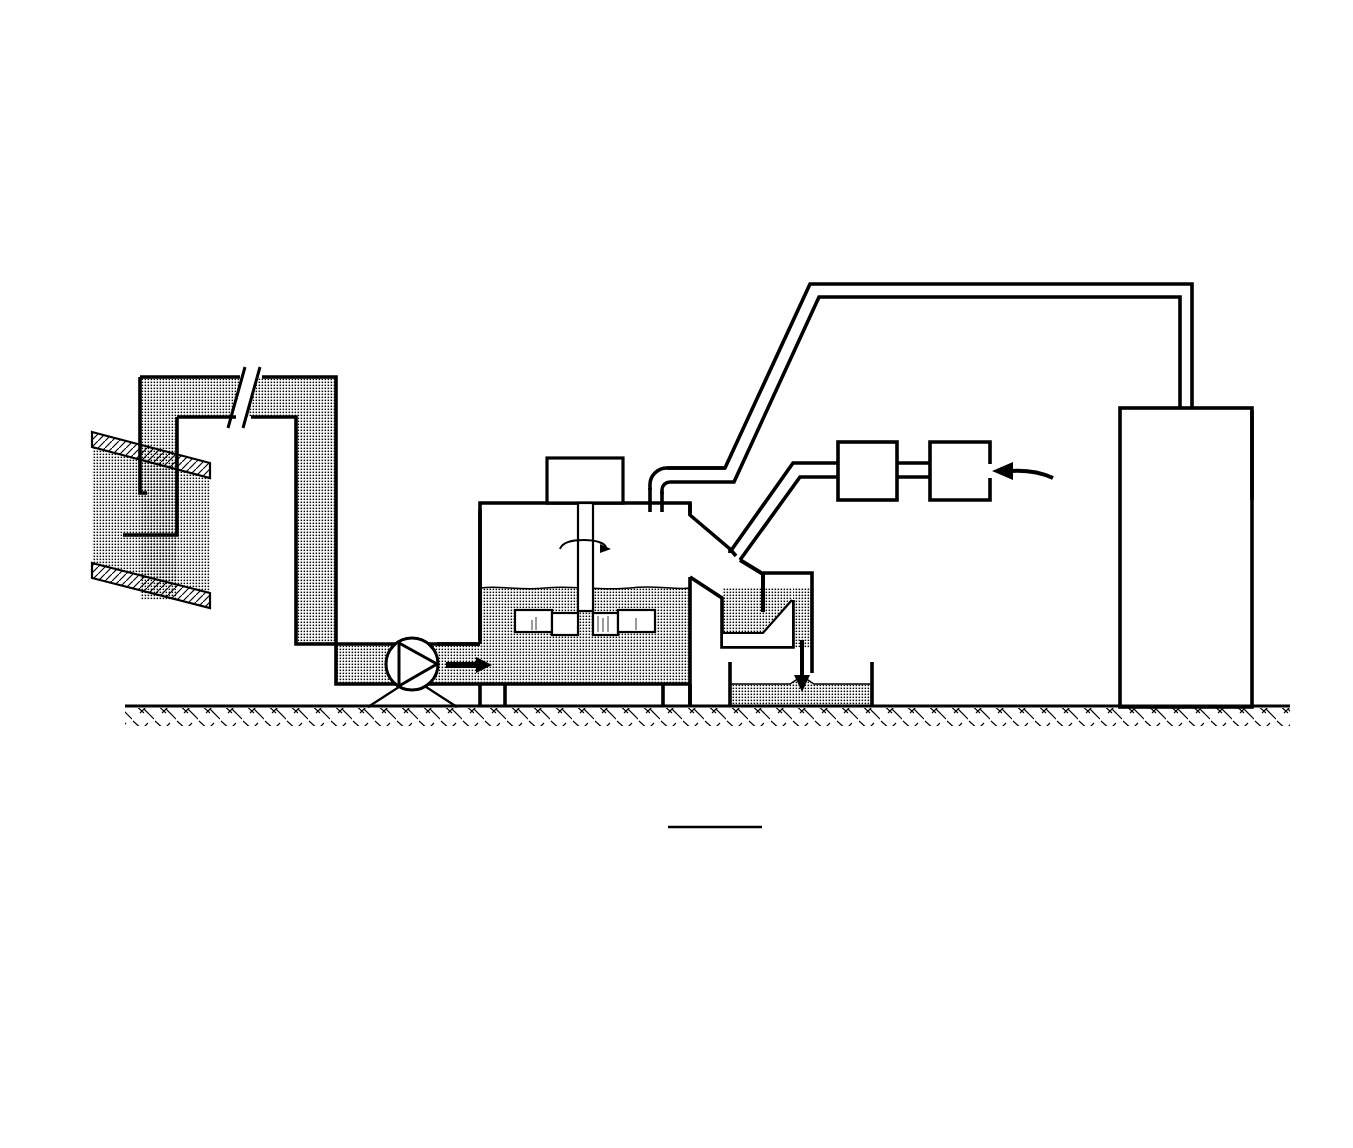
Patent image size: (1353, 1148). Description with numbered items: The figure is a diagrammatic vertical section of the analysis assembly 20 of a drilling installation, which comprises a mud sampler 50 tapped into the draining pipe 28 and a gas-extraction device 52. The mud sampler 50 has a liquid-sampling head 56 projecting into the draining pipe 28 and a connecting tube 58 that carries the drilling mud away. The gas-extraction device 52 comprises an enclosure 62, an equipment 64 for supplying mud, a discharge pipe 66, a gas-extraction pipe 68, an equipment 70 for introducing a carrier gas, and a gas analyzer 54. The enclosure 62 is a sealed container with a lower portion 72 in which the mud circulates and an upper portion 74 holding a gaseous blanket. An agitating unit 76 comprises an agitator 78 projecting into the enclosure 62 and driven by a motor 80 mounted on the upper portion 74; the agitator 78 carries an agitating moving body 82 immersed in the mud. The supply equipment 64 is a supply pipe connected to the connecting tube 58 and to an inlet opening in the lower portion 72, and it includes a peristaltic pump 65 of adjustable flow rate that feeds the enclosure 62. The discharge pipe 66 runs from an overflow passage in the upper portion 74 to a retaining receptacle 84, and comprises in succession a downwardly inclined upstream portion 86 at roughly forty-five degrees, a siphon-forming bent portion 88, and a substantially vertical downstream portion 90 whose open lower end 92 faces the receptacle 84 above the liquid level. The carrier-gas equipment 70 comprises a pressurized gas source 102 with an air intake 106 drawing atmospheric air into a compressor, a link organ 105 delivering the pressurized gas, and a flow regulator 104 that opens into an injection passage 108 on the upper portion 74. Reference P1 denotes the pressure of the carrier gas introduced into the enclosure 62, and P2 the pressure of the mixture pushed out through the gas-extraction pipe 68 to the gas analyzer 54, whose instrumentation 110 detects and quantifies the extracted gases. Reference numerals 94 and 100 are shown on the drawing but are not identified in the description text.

The analysis assembly 20 is at (623, 241).
The draining pipe 28 is at (143, 592).
The mud sampler 50 is at (297, 350).
The gas-extraction device 52 is at (535, 374).
The gas analyzer 54 is at (1215, 383).
The liquid-sampling head 56 is at (135, 483).
The connecting tube 58 is at (337, 445).
The enclosure 62 is at (480, 503).
The equipment for supplying mud 64 is at (458, 642).
The peristaltic pump 65 is at (412, 637).
The discharge pipe 66 is at (755, 563).
The gas-extraction pipe 68 is at (706, 456).
The equipment for introducing a carrier gas 70 is at (916, 512).
The lower portion 72 is at (692, 688).
The upper portion 74 is at (493, 540).
The agitating unit 76 is at (527, 481).
The agitator 78 is at (594, 573).
The motor 80 is at (583, 465).
The agitating moving body 82 is at (565, 603).
The retaining receptacle 84 is at (875, 675).
The upstream portion 86 is at (703, 592).
The bent portion 88 is at (745, 635).
The downstream portion 90 is at (813, 637).
The lower end 92 is at (814, 676).
The valve 94 is at (700, 532).
The pipe inlet 100 is at (655, 512).
The pressurized gas source 102 is at (962, 441).
The flow regulator 104 is at (871, 440).
The link organ 105 is at (916, 462).
The air intake 106 is at (991, 464).
The injection passage 108 is at (730, 556).
The instrumentation 110 is at (1253, 421).
The pressure of the carrier gas P1 is at (780, 500).
The pressure of the mixture P2 is at (682, 468).